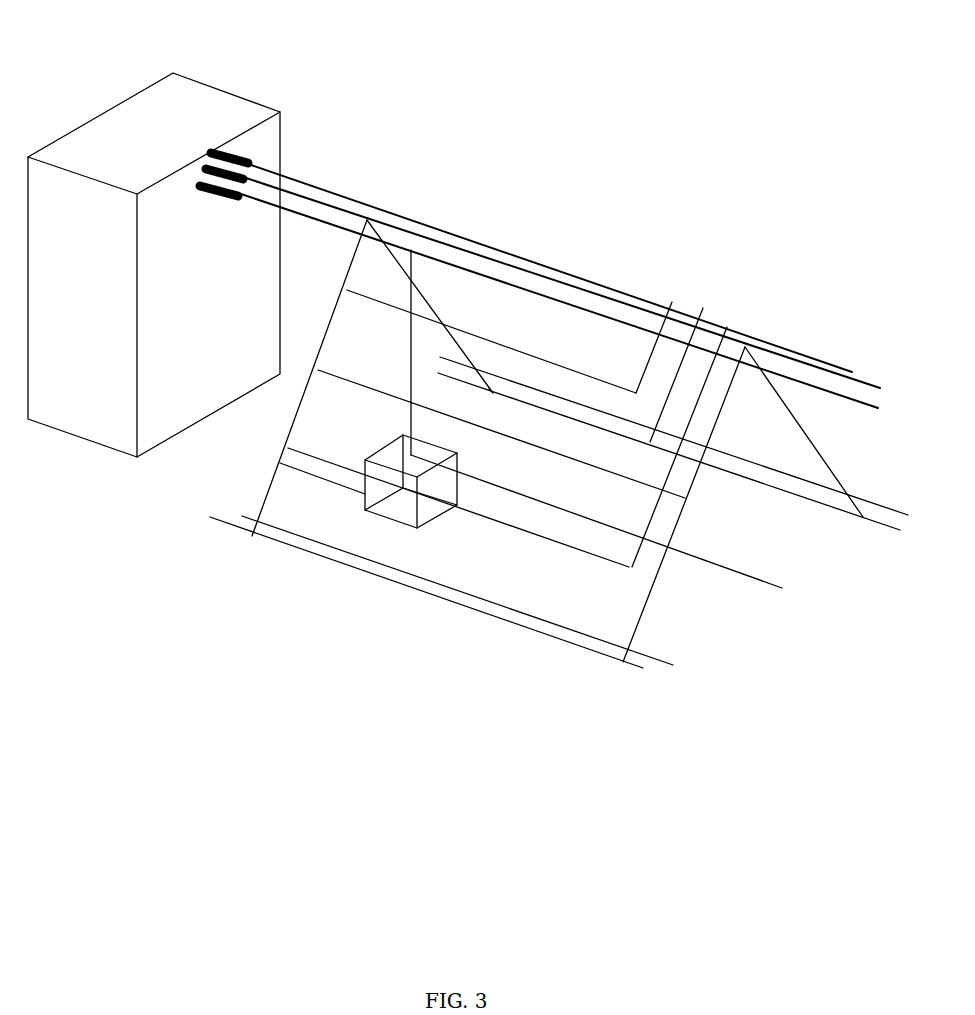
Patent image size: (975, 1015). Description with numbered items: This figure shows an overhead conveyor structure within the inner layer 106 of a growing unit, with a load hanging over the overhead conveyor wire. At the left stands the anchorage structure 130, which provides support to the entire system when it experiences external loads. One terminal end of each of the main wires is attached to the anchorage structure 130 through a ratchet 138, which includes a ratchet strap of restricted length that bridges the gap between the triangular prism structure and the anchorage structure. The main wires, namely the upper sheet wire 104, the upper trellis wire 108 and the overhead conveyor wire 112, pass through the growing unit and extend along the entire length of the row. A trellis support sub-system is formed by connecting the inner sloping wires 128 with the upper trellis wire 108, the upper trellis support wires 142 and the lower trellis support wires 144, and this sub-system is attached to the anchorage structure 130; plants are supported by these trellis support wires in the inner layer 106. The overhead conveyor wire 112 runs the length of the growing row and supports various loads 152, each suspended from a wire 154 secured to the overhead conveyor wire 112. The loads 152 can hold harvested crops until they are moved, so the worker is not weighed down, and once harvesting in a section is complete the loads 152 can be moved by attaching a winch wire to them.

The inner layer 106 is at (626, 120).
The anchorage structure 130 is at (287, 114).
The ratchet 138 is at (240, 155).
The upper sheet wire 104 is at (575, 277).
The upper trellis wire 108 is at (597, 292).
The overhead conveyor wire 112 is at (616, 317).
The inner sloping wires 128 is at (263, 507).
The lower trellis support wires 144 is at (290, 550).
The upper trellis support wires 142 is at (547, 420).
The loads 152 is at (282, 462).
The wire 154 is at (318, 370).